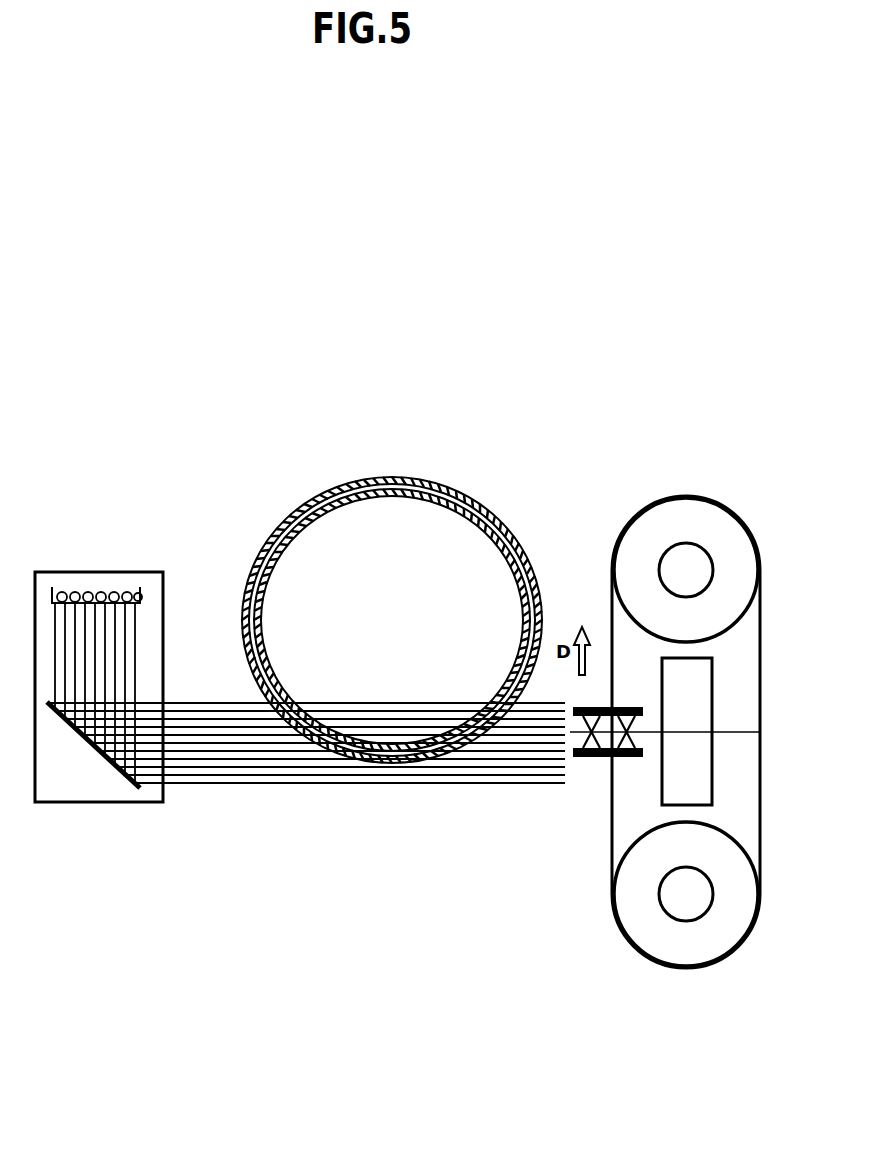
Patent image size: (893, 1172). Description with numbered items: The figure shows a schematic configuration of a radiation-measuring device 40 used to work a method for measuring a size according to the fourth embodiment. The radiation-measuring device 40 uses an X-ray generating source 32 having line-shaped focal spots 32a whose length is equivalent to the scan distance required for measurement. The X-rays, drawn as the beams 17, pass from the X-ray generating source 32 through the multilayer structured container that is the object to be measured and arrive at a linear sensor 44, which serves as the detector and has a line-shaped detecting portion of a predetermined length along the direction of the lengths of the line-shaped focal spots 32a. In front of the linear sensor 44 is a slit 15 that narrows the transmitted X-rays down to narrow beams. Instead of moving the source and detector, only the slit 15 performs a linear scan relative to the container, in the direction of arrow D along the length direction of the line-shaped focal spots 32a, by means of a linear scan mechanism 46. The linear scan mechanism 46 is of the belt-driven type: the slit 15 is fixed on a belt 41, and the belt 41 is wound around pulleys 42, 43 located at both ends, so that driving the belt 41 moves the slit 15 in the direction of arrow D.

The slit 15 is at (590, 758).
The light beams 17 is at (533, 735).
The X-ray generating source 32 is at (119, 803).
The line-shaped focal spots 32a is at (83, 741).
The radiation-measuring device 40 is at (275, 820).
The belt 41 is at (608, 847).
The pulley 42 is at (690, 518).
The pulley 43 is at (697, 950).
The linear sensor 44 is at (713, 779).
The linear scan mechanism 46 is at (676, 736).